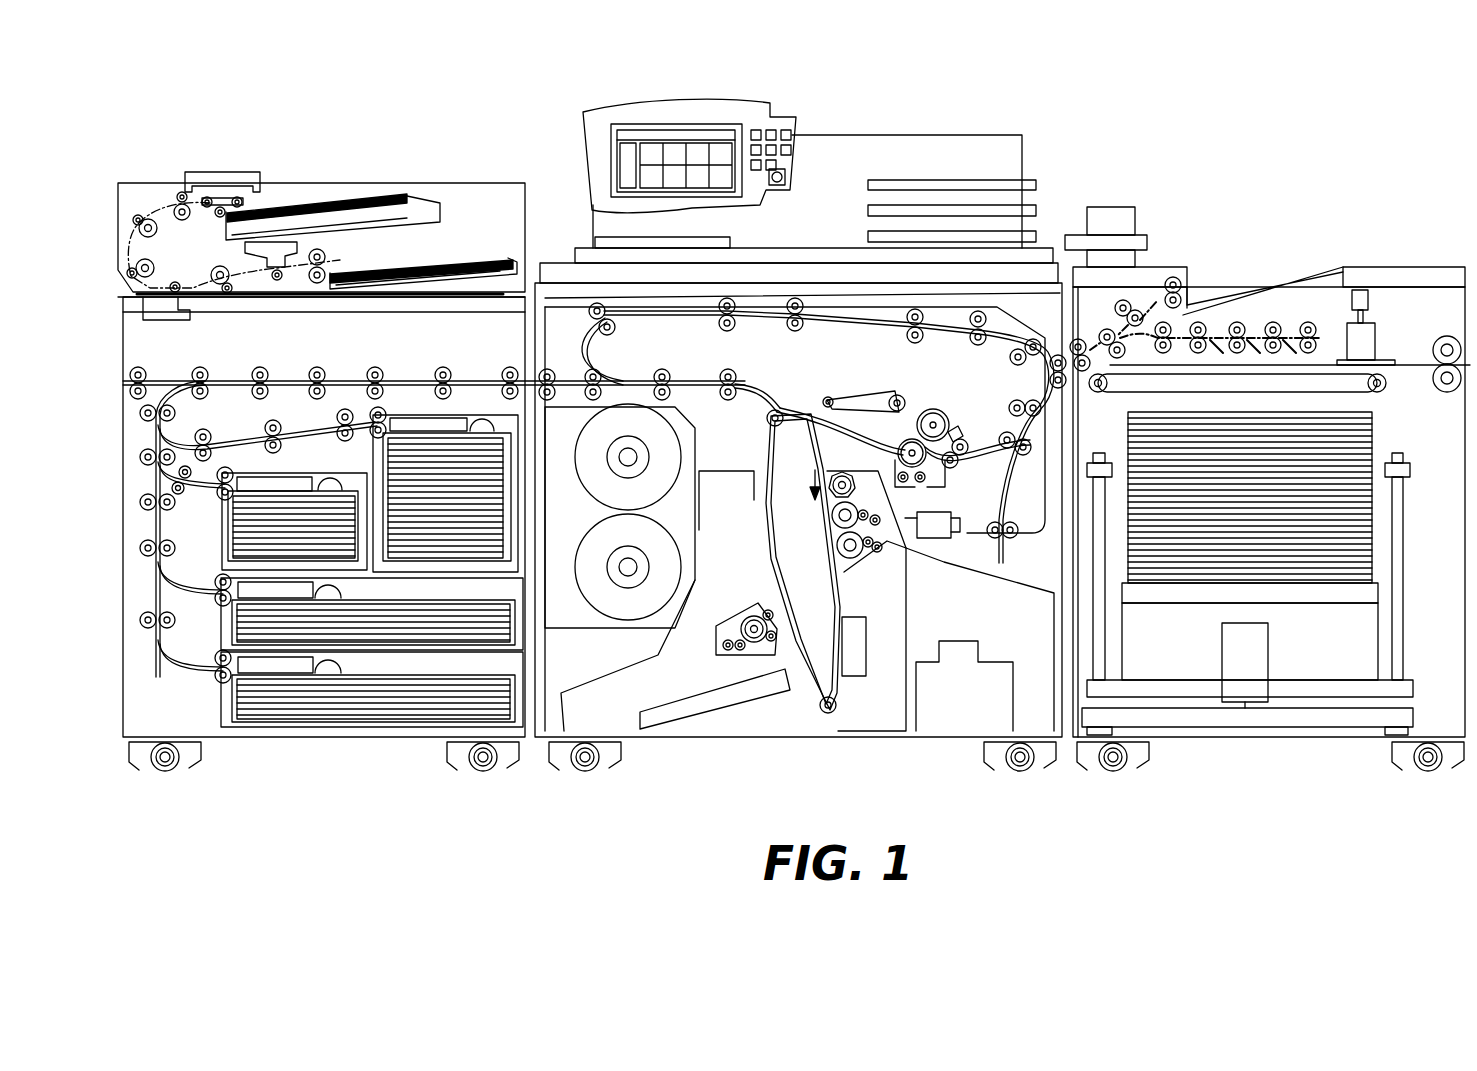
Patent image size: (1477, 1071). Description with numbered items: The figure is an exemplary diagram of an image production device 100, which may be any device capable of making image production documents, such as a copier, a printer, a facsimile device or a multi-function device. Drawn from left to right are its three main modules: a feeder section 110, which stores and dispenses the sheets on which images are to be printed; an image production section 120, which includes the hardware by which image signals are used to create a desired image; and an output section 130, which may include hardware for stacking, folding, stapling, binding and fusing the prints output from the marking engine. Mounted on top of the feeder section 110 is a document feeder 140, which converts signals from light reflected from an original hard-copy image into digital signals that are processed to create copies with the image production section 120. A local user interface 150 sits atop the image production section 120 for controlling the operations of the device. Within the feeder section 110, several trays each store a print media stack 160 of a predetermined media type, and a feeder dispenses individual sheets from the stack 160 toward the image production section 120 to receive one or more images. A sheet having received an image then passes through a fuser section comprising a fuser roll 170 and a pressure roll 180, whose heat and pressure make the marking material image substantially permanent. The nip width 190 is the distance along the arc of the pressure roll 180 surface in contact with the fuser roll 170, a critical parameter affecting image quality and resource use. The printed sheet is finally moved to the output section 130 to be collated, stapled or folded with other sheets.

The image production device 100 is at (1197, 120).
The feeder section 110 is at (323, 740).
The image production section 120 is at (759, 740).
The output section 130 is at (1242, 737).
The document feeder 140 is at (457, 183).
The local user interface 150 is at (876, 143).
The print media stack 160 is at (222, 700).
The fuser roll 170 is at (943, 412).
The pressure roll 180 is at (917, 440).
The nip width 190 is at (919, 482).